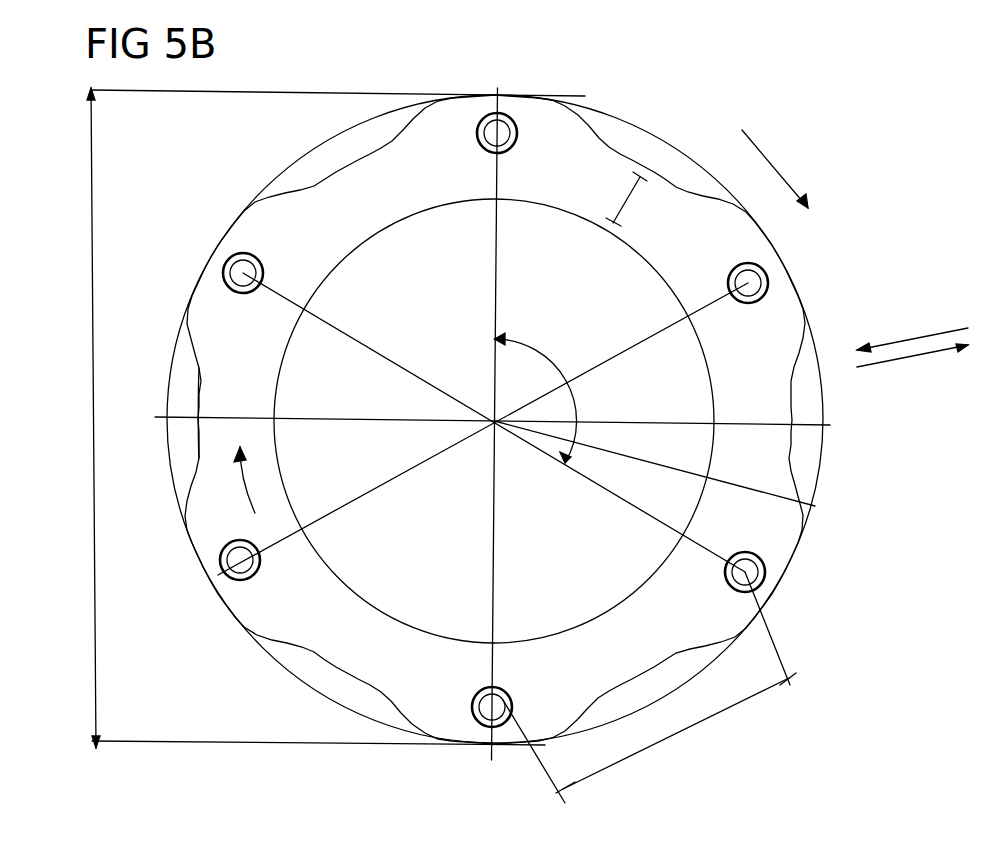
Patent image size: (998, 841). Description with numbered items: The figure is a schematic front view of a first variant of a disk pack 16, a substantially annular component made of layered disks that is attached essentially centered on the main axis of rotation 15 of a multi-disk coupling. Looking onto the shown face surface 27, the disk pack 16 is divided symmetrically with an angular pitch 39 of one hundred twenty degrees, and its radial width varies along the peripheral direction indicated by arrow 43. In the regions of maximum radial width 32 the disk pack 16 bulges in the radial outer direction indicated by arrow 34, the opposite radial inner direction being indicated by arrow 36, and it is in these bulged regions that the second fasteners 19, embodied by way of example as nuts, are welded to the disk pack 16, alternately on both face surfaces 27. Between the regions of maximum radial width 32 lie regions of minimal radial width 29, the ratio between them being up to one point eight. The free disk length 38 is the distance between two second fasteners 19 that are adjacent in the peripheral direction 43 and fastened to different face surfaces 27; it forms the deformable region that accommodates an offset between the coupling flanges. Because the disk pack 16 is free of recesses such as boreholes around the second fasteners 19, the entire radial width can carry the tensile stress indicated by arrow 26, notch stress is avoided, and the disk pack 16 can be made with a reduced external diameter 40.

The main axis of rotation 15 is at (497, 418).
The disk pack 16 is at (199, 433).
The second fasteners 19 is at (486, 118).
The tensile stress 26 is at (243, 477).
The face surface 27 is at (205, 400).
The minimal radial width 29 is at (622, 206).
The maximum radial width 32 is at (262, 563).
The radial outer direction 34 is at (912, 358).
The radial inner direction 36 is at (910, 338).
The free disk length 38 is at (667, 745).
The angular pitch 39 is at (540, 353).
The external diameter 40 is at (93, 415).
The peripheral direction 43 is at (775, 162).